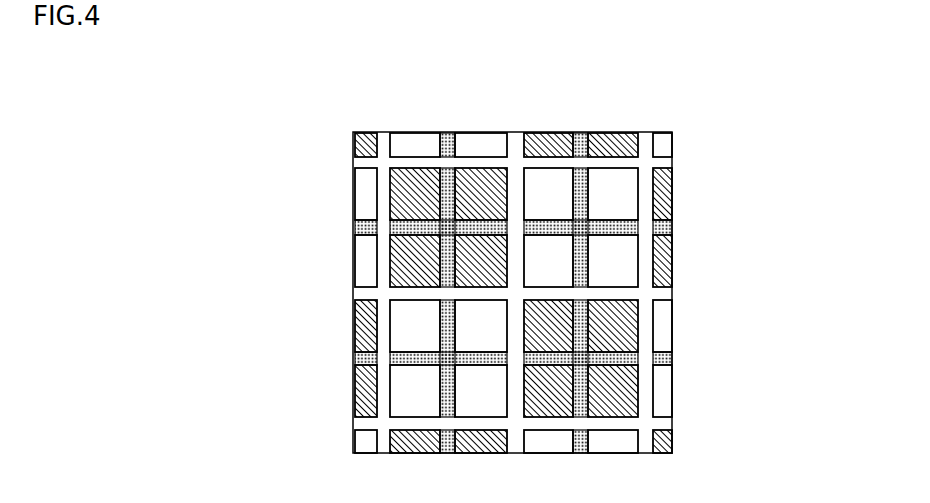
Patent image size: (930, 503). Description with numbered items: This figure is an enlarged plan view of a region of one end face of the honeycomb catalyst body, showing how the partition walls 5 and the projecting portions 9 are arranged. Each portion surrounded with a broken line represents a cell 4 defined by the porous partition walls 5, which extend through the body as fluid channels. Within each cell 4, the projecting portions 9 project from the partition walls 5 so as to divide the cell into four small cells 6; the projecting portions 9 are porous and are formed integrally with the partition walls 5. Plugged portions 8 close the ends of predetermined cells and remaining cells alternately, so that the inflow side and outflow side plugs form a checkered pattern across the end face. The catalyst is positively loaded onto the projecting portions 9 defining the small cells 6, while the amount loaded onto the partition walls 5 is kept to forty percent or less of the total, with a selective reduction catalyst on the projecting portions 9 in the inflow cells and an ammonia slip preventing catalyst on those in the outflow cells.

The cell 4 is at (622, 260).
The partition wall 5 is at (385, 332).
The small cell 6 is at (549, 192).
The plugged portion 8 is at (403, 203).
The projecting portion 9 is at (420, 228).